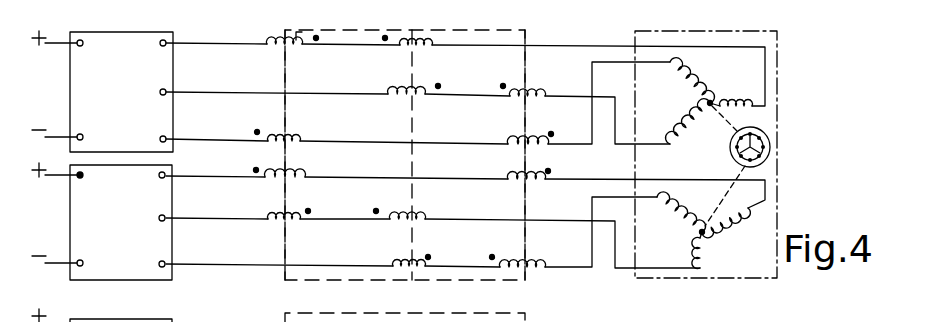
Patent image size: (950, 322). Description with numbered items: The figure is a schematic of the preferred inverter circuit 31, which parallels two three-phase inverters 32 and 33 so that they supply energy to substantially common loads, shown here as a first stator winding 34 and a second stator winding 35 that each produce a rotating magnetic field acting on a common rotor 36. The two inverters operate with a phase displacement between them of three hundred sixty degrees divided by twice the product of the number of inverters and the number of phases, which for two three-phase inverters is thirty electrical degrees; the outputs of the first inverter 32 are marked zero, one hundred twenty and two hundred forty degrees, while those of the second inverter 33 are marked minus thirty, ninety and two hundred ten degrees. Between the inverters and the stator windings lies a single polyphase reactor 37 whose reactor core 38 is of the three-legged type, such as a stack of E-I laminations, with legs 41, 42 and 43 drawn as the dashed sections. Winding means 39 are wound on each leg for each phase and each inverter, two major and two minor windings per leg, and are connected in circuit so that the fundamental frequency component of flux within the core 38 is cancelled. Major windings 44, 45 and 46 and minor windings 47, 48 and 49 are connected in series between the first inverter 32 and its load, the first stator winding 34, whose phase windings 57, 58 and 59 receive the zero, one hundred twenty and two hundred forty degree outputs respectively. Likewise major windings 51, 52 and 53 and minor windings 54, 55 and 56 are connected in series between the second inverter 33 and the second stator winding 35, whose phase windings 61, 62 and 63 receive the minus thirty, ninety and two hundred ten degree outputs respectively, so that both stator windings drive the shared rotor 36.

The inverter circuit 31 is at (842, 64).
The first inverter 32 is at (70, 80).
The second inverter 33 is at (70, 212).
The first stator winding 34 is at (711, 109).
The second stator winding 35 is at (713, 231).
The common rotor 36 is at (770, 140).
The reactor 37 is at (306, 290).
The reactor core 38 is at (360, 282).
The winding means 39 is at (423, 88).
The first reactor core leg 41 is at (285, 247).
The second reactor core leg 42 is at (412, 247).
The third reactor core leg 43 is at (525, 245).
The major winding 44 is at (296, 34).
The major winding 45 is at (420, 90).
The major winding 46 is at (535, 140).
The minor winding 47 is at (295, 138).
The minor winding 48 is at (424, 40).
The minor winding 49 is at (528, 92).
The major winding 51 is at (296, 173).
The major winding 52 is at (418, 215).
The major winding 53 is at (530, 264).
The minor winding 54 is at (290, 216).
The minor winding 55 is at (415, 263).
The minor winding 56 is at (535, 176).
The phase winding 57 is at (735, 103).
The phase winding 58 is at (694, 134).
The phase winding 59 is at (688, 90).
The phase winding 61 is at (727, 224).
The phase winding 62 is at (698, 253).
The phase winding 63 is at (676, 214).